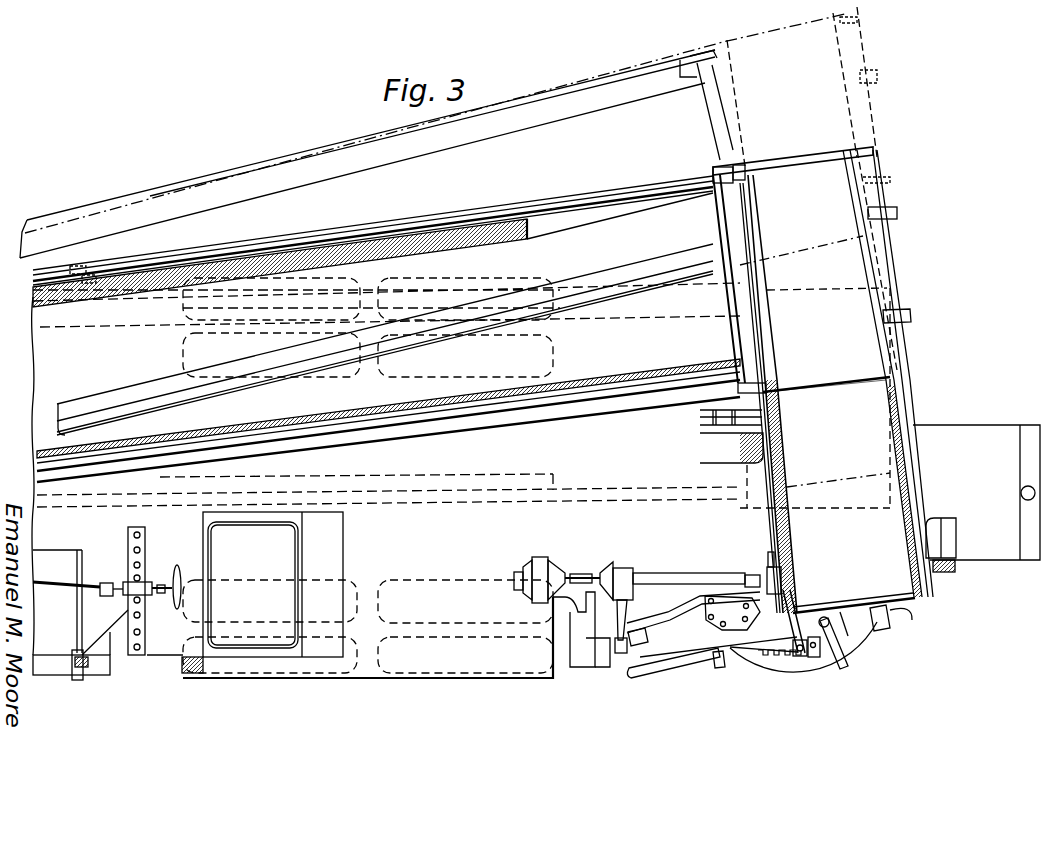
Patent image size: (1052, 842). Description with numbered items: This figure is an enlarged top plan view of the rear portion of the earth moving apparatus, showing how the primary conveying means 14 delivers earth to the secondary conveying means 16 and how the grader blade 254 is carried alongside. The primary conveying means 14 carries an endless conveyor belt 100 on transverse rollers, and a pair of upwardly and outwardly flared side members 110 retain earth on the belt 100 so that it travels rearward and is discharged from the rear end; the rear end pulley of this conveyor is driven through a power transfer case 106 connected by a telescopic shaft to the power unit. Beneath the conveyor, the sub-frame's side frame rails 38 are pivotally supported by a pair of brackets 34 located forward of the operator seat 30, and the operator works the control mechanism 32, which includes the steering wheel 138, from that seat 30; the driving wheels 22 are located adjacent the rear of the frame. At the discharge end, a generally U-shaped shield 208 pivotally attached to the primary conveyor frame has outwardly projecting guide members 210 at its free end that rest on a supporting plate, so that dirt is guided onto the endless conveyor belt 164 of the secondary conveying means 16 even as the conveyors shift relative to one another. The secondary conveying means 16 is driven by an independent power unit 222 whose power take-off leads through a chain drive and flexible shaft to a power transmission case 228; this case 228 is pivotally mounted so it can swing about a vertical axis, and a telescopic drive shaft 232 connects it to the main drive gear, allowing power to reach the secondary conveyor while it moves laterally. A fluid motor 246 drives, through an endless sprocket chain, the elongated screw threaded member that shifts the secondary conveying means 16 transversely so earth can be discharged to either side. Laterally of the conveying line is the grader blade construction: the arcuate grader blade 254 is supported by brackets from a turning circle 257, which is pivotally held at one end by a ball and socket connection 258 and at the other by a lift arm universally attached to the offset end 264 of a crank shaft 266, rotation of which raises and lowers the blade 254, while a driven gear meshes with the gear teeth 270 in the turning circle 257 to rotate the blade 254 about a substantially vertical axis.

The primary conveying means 14 is at (337, 230).
The side members 110 is at (398, 245).
The endless conveyor belt 100 is at (453, 260).
The power transfer case 106 is at (740, 445).
The U-shaped shield 208 is at (850, 207).
The guide members 210 is at (903, 312).
The secondary conveying means 16 is at (908, 400).
The endless conveyor belt 164 is at (873, 432).
The independent power unit 222 is at (980, 425).
The fluid motor 246 is at (942, 532).
The operator seat 30 is at (245, 533).
The control mechanism 32 is at (151, 548).
The steering wheel 138 is at (177, 608).
The side frame rails 38 is at (60, 667).
The brackets 34 is at (102, 670).
The driving wheels 22 is at (192, 667).
The power transmission case 228 is at (535, 570).
The drive shaft 232 is at (652, 578).
The crank shaft 266 is at (683, 590).
The ball and socket connection 258 is at (593, 677).
The grader blade 254 is at (678, 663).
The gear teeth 270 is at (772, 656).
The offset end 264 is at (797, 660).
The turning circle 257 is at (815, 662).